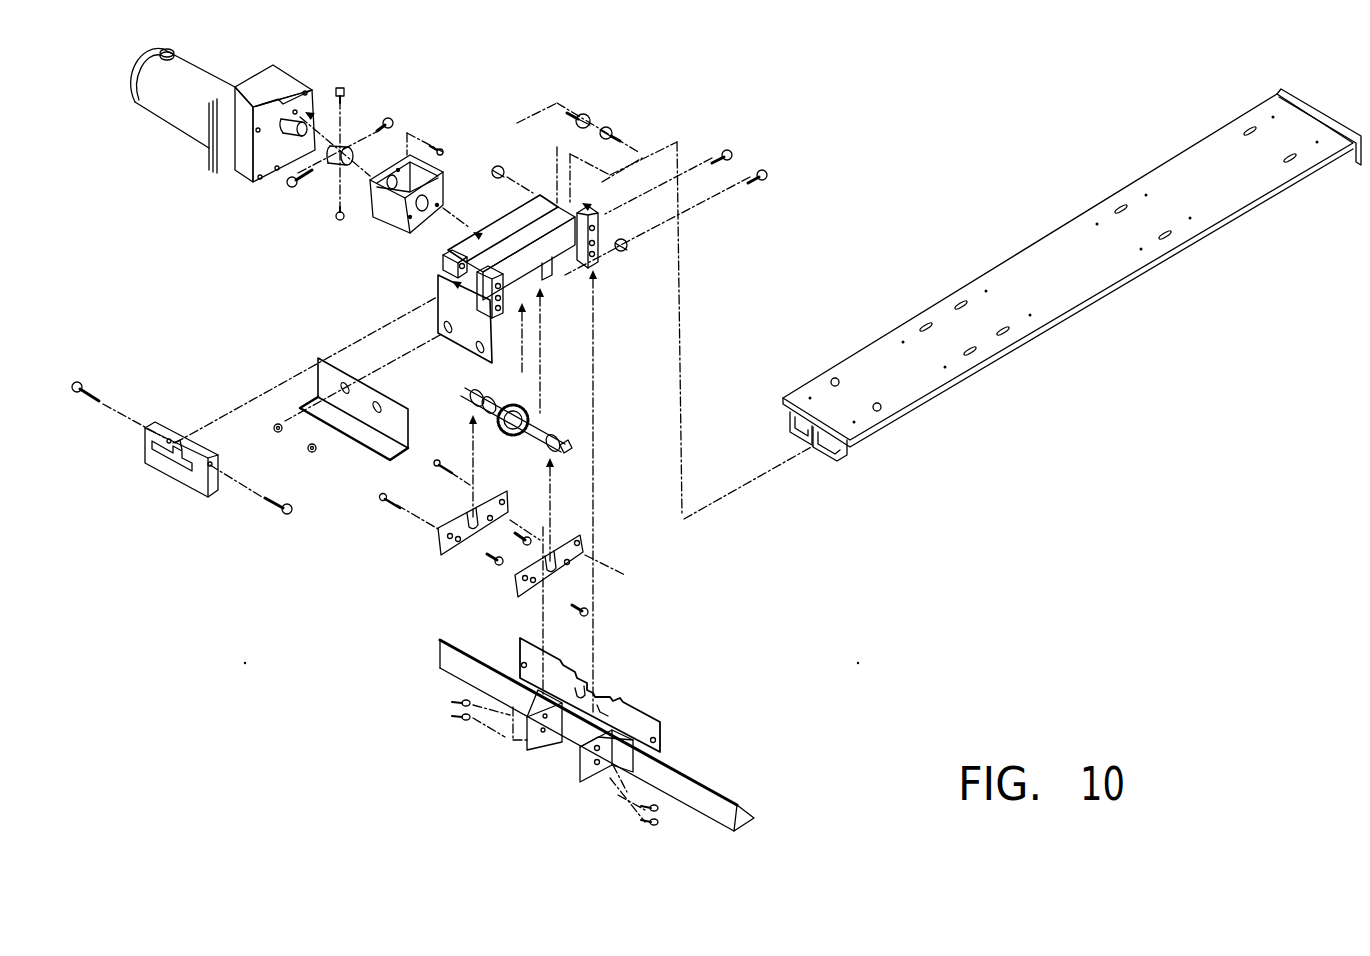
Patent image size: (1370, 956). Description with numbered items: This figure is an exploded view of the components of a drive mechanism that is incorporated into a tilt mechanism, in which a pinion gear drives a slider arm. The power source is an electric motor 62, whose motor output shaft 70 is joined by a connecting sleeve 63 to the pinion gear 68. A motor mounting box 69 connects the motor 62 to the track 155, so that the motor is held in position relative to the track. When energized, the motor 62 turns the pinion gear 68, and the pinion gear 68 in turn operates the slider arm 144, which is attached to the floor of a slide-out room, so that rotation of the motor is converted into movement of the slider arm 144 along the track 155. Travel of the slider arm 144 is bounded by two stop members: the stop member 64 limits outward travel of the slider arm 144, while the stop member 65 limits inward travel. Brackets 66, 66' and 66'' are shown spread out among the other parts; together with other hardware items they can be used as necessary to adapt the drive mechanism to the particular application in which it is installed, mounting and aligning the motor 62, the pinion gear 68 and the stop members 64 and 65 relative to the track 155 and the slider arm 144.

The electric motor 62 is at (153, 115).
The motor output shaft 70 is at (296, 150).
The connecting sleeve 63 is at (333, 170).
The motor mounting box 69 is at (397, 230).
The track 155 is at (500, 223).
The bracket 66' is at (457, 349).
The bracket 66'' is at (354, 429).
The pinion gear 68 is at (533, 418).
The stop member 65 is at (173, 482).
The stop member 64 is at (657, 707).
The bracket 66 is at (576, 774).
The slider arm 144 is at (972, 284).